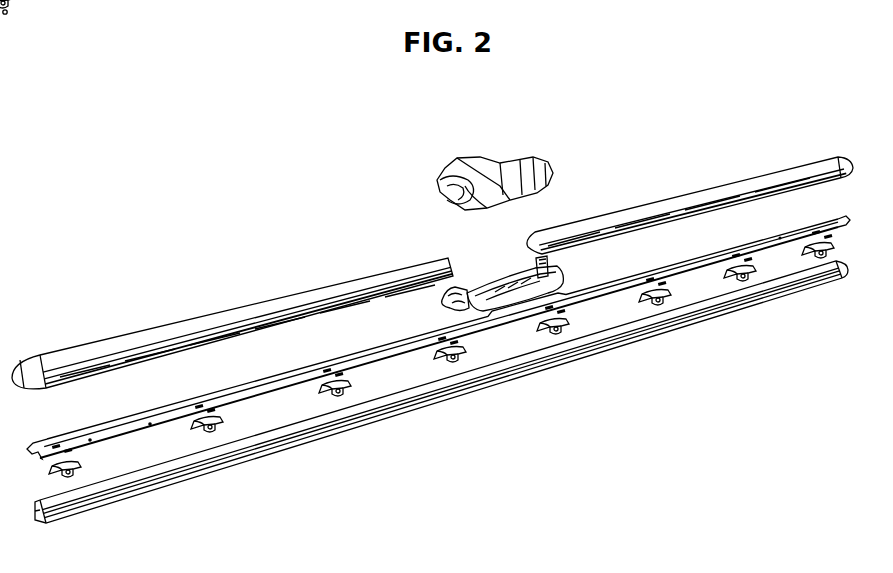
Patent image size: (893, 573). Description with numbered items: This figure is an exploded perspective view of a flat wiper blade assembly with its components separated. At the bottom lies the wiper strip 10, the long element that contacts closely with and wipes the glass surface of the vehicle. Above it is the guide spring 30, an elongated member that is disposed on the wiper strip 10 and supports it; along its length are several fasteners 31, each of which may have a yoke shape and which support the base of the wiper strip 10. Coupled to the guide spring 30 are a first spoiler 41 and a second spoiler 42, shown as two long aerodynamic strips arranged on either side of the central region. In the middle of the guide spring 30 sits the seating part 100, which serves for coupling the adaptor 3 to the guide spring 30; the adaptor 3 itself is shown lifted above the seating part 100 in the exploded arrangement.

The adaptor 3 is at (537, 157).
The wiper strip 10 is at (478, 375).
The guide spring 30 is at (597, 287).
The fastener 31 is at (828, 246).
The first spoiler 41 is at (342, 289).
The second spoiler 42 is at (637, 213).
The seating part 100 is at (447, 301).